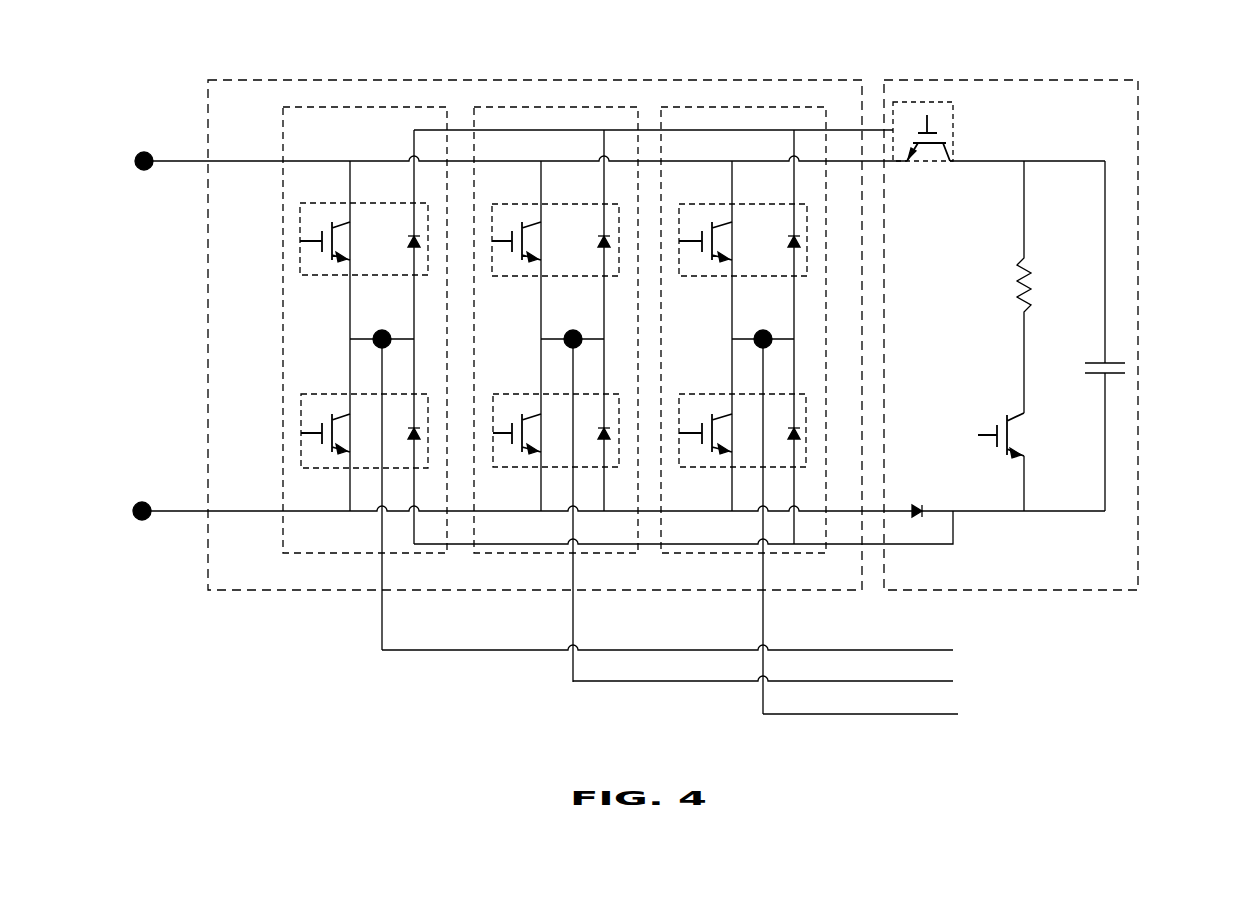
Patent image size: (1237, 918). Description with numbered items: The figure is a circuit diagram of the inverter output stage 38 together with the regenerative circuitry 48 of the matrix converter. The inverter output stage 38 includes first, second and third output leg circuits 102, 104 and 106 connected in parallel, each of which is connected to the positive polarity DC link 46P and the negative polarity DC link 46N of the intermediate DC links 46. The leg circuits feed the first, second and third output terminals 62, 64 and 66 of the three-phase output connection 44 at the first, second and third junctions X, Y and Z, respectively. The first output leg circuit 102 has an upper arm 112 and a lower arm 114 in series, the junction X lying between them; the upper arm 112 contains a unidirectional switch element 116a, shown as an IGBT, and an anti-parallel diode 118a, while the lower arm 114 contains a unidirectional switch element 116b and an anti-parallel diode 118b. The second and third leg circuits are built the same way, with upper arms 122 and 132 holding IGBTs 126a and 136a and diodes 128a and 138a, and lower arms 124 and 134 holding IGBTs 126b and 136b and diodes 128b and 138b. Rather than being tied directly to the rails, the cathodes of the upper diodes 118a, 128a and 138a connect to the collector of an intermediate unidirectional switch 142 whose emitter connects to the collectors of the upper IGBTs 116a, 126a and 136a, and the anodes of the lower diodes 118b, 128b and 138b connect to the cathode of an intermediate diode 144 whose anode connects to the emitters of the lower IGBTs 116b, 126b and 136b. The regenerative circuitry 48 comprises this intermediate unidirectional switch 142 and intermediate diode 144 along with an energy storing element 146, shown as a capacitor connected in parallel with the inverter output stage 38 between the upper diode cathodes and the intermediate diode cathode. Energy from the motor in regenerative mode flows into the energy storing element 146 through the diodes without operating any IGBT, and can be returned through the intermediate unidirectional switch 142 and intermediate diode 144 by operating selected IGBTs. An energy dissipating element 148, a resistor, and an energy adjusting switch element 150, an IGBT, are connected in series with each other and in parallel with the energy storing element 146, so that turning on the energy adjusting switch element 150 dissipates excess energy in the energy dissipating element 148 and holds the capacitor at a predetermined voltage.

The inverter output stage 38 is at (790, 80).
The three-phase output connection 44 is at (750, 656).
The intermediate DC links 46 is at (147, 113).
The positive polarity DC link 46P is at (150, 153).
The negative polarity DC link 46N is at (146, 522).
The regenerative circuitry 48 is at (1093, 80).
The first output terminal 62 is at (940, 650).
The second output terminal 64 is at (940, 681).
The third output terminal 66 is at (940, 714).
The first output leg circuit 102 is at (315, 107).
The second output leg circuit 104 is at (500, 107).
The third output leg circuit 106 is at (672, 107).
The upper arm 112 is at (300, 215).
The lower arm 114 is at (300, 409).
The unidirectional switch element 116a is at (322, 253).
The unidirectional switch element 116b is at (322, 443).
The anti-parallel diode 118a is at (412, 237).
The anti-parallel diode 118b is at (416, 428).
The upper arm 122 is at (530, 203).
The lower arm 124 is at (522, 394).
The IGBT 126a is at (525, 247).
The IGBT 126b is at (525, 436).
The diode 128a is at (601, 238).
The diode 128b is at (603, 428).
The upper arm 132 is at (703, 203).
The lower arm 134 is at (712, 394).
The IGBT 136a is at (715, 257).
The IGBT 136b is at (714, 455).
The diode 138a is at (790, 238).
The diode 138b is at (797, 428).
The intermediate unidirectional switch 142 is at (948, 135).
The intermediate diode 144 is at (912, 505).
The energy storing element 146 is at (1112, 362).
The energy dissipating element 148 is at (1020, 272).
The energy adjusting switch element 150 is at (995, 425).
The first junction X is at (379, 330).
The second junction Y is at (571, 330).
The third junction Z is at (761, 330).